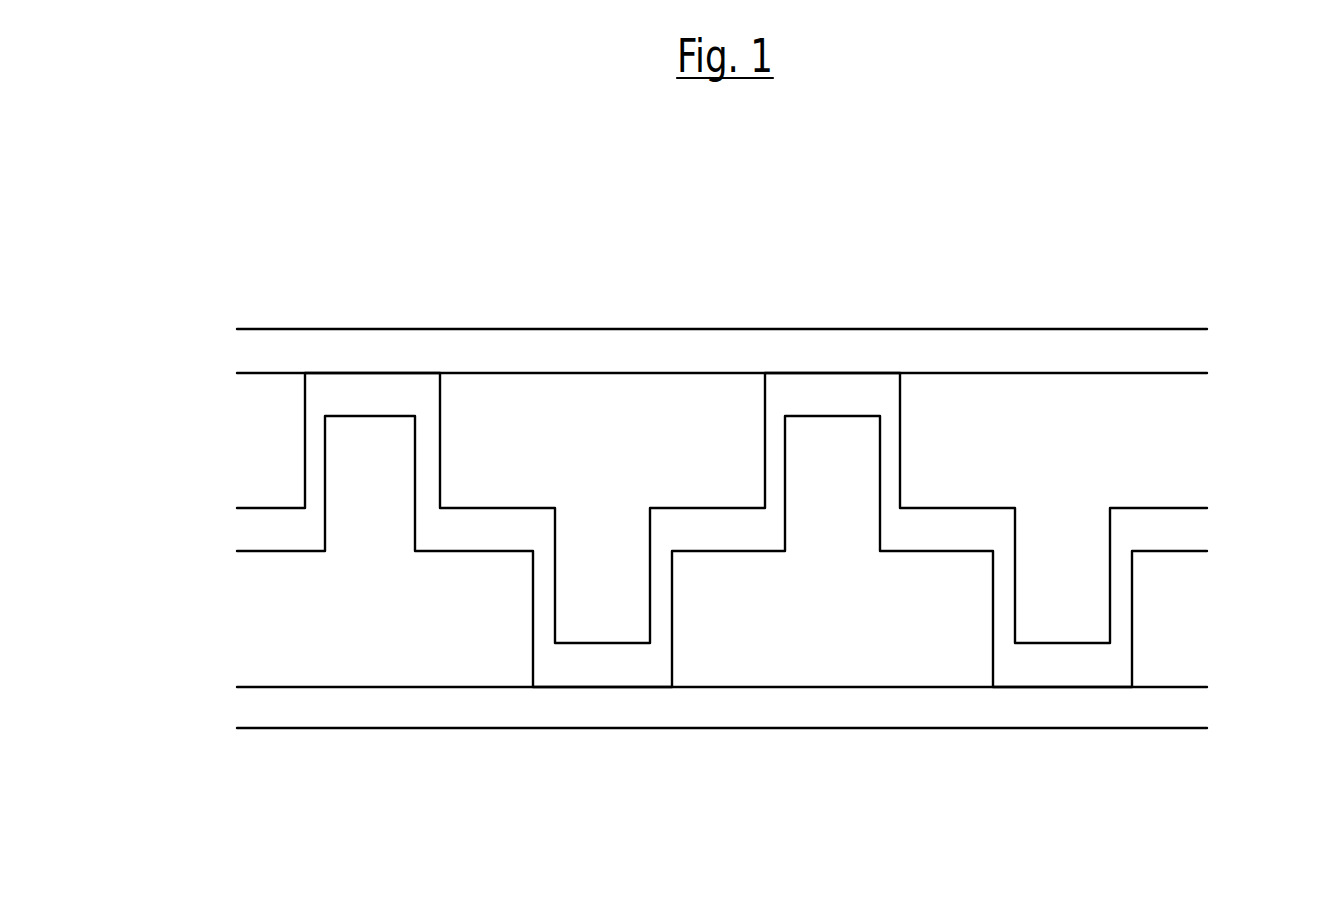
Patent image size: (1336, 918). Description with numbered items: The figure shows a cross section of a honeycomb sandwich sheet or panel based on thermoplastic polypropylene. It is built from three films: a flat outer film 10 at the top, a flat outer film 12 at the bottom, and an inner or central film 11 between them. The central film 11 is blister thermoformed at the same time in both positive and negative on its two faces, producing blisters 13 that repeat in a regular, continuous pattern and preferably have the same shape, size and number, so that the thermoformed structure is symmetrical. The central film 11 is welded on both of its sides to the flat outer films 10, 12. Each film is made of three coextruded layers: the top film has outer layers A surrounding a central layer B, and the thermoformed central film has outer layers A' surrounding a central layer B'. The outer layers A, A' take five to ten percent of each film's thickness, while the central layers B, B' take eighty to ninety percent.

The top flat outer film 10 is at (758, 295).
The inner or central film 11 is at (703, 571).
The bottom flat outer film 12 is at (782, 756).
The blisters 13 is at (619, 475).
The outer layer of the top coextruded film A is at (774, 351).
The central layer of the top coextruded film B is at (1252, 351).
The outer layer of the central thermoformed film A' is at (779, 530).
The central layer of the central thermoformed film B' is at (1257, 528).